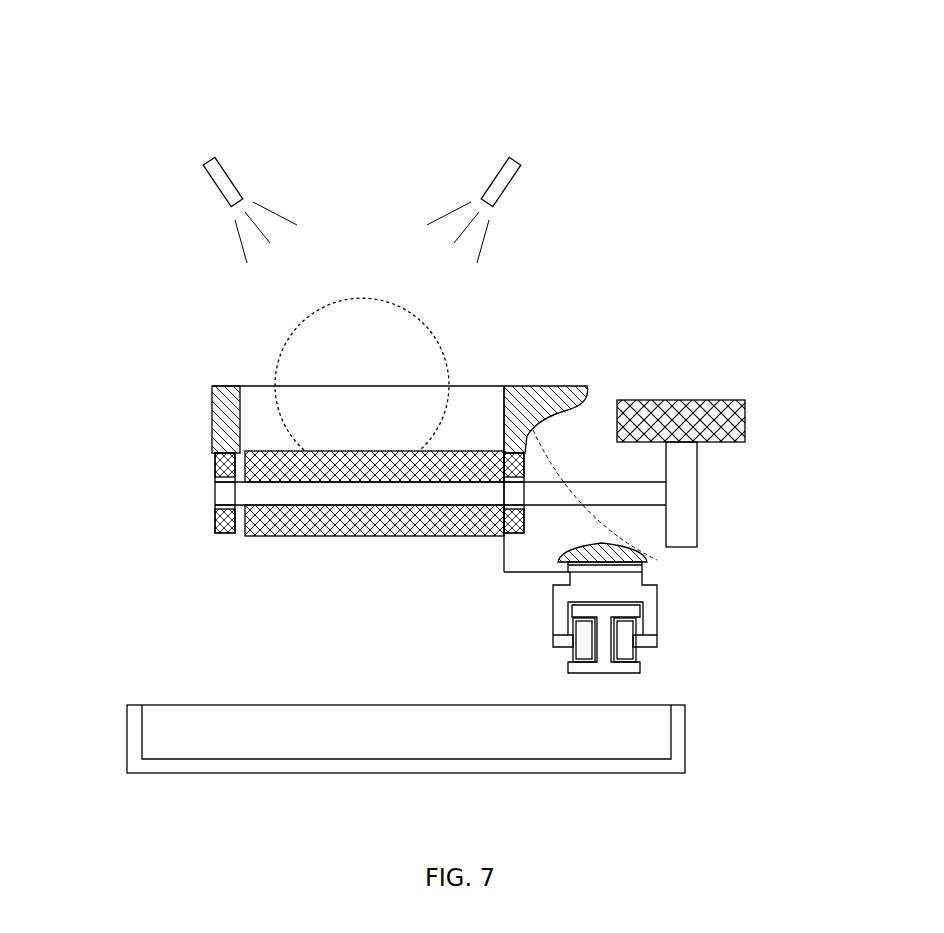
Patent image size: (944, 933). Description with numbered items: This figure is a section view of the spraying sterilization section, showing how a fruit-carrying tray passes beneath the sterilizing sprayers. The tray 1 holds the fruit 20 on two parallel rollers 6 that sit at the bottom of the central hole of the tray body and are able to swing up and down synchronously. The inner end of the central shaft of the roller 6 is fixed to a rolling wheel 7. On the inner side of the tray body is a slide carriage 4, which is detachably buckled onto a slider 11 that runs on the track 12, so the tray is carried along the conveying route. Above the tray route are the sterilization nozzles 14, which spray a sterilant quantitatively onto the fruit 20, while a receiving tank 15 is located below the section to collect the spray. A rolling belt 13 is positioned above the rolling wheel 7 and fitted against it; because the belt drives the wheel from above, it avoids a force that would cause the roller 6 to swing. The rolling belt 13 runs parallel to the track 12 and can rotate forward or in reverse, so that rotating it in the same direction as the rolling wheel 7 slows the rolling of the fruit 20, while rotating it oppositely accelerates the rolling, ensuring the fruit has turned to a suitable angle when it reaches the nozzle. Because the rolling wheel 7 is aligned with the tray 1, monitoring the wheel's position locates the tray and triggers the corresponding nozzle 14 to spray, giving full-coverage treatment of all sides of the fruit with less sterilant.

The tray 1 is at (213, 413).
The slide carriage 4 is at (643, 557).
The rollers 6 is at (240, 505).
The rolling wheel 7 is at (685, 505).
The slider 11 is at (627, 592).
The track 12 is at (607, 664).
The rolling belt 13 is at (683, 400).
The sterilization nozzles 14 is at (233, 175).
The receiving tank 15 is at (248, 745).
The fruit 20 is at (300, 368).